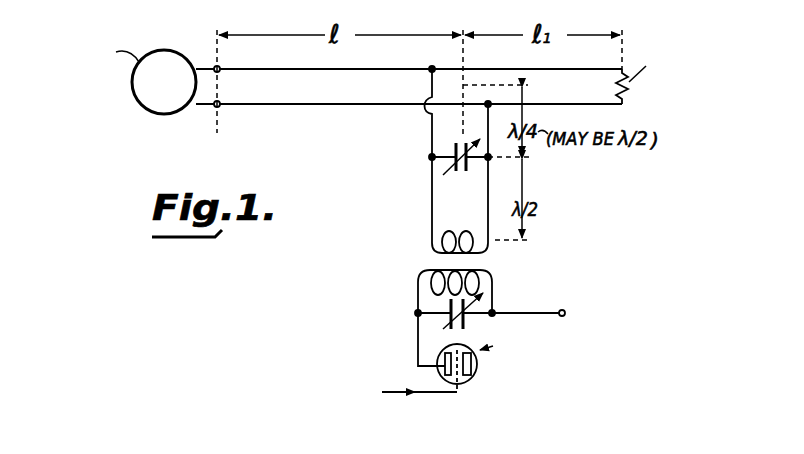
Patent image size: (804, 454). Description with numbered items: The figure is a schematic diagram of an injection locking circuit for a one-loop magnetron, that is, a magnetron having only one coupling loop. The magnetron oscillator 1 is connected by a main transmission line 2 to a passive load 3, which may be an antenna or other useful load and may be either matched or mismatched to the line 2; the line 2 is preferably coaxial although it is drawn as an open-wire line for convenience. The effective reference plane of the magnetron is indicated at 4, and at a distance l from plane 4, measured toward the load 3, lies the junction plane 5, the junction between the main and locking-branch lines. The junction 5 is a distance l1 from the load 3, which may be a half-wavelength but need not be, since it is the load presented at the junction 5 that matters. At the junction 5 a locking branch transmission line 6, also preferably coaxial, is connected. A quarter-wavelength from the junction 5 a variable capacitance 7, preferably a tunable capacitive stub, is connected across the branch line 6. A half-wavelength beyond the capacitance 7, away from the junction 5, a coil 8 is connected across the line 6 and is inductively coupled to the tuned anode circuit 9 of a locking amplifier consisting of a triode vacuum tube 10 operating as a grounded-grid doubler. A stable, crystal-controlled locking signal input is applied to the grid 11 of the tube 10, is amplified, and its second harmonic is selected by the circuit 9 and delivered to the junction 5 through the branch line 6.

The magnetron oscillator 1 is at (146, 112).
The main transmission line 2 is at (248, 70).
The passive load 3 is at (630, 91).
The effective reference plane of the magnetron 4 is at (219, 127).
The junction plane 5 is at (485, 84).
The locking branch transmission line 6 is at (429, 128).
The variable capacitance 7 is at (460, 173).
The coil 8 is at (457, 231).
The tuned anode circuit 9 is at (426, 291).
The triode vacuum tube 10 is at (477, 372).
The grid 11 is at (468, 348).